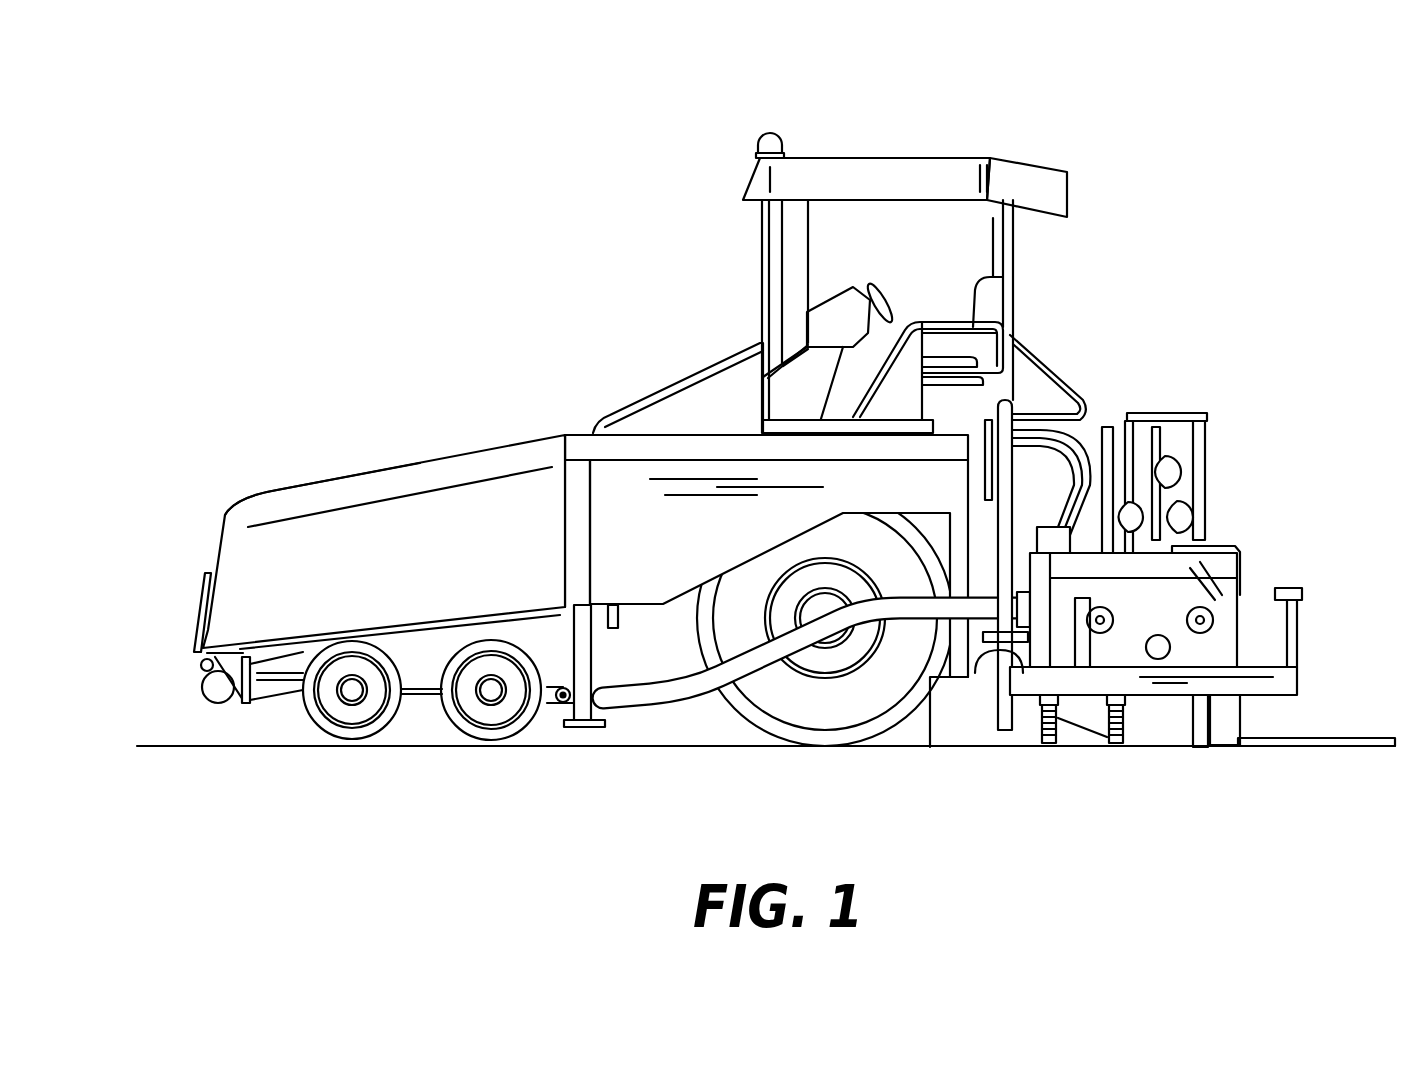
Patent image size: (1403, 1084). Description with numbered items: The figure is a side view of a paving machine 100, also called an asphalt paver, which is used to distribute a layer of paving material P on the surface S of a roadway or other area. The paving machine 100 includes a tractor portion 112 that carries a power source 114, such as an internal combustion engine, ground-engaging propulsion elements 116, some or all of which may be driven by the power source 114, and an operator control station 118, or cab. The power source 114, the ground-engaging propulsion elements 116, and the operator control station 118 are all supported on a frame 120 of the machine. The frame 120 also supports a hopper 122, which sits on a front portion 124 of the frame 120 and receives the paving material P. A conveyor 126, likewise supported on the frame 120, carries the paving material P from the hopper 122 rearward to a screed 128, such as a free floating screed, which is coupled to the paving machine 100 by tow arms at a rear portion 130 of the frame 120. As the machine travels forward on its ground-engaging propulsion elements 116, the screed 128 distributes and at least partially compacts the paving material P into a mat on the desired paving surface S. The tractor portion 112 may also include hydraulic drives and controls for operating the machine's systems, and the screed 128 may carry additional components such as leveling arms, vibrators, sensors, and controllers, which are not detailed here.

The paving machine 100 is at (1041, 137).
The tractor portion 112 is at (620, 380).
The power source 114 is at (478, 438).
The ground-engaging propulsion elements 116 is at (375, 747).
The operator control station 118 is at (910, 157).
The frame 120 is at (627, 665).
The hopper 122 is at (333, 470).
The front portion 124 is at (384, 496).
The conveyor 126 is at (186, 621).
The screed 128 is at (1228, 532).
The rear portion 130 is at (1105, 384).
The paving material P is at (1337, 738).
The surface S is at (1338, 747).